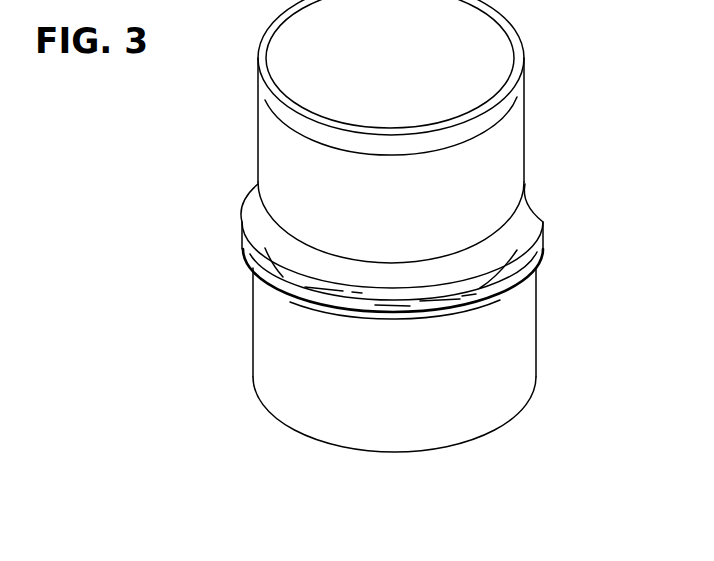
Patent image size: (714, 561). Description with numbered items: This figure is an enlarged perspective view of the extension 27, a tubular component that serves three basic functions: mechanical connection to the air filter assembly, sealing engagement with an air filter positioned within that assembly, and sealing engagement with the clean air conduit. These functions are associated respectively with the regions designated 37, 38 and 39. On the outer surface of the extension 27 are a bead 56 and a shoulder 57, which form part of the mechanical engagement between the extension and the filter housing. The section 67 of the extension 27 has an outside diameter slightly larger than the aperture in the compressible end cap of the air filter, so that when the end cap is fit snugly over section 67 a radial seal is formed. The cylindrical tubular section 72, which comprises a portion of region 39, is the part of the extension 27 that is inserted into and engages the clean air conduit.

The extension 27 is at (592, 222).
The region 37 is at (207, 234).
The region 38 is at (537, 343).
The region 39 is at (524, 122).
The bead 56 is at (396, 317).
The shoulder 57 is at (357, 275).
The section 67 is at (493, 402).
The cylindrical tubular section 72 is at (258, 136).